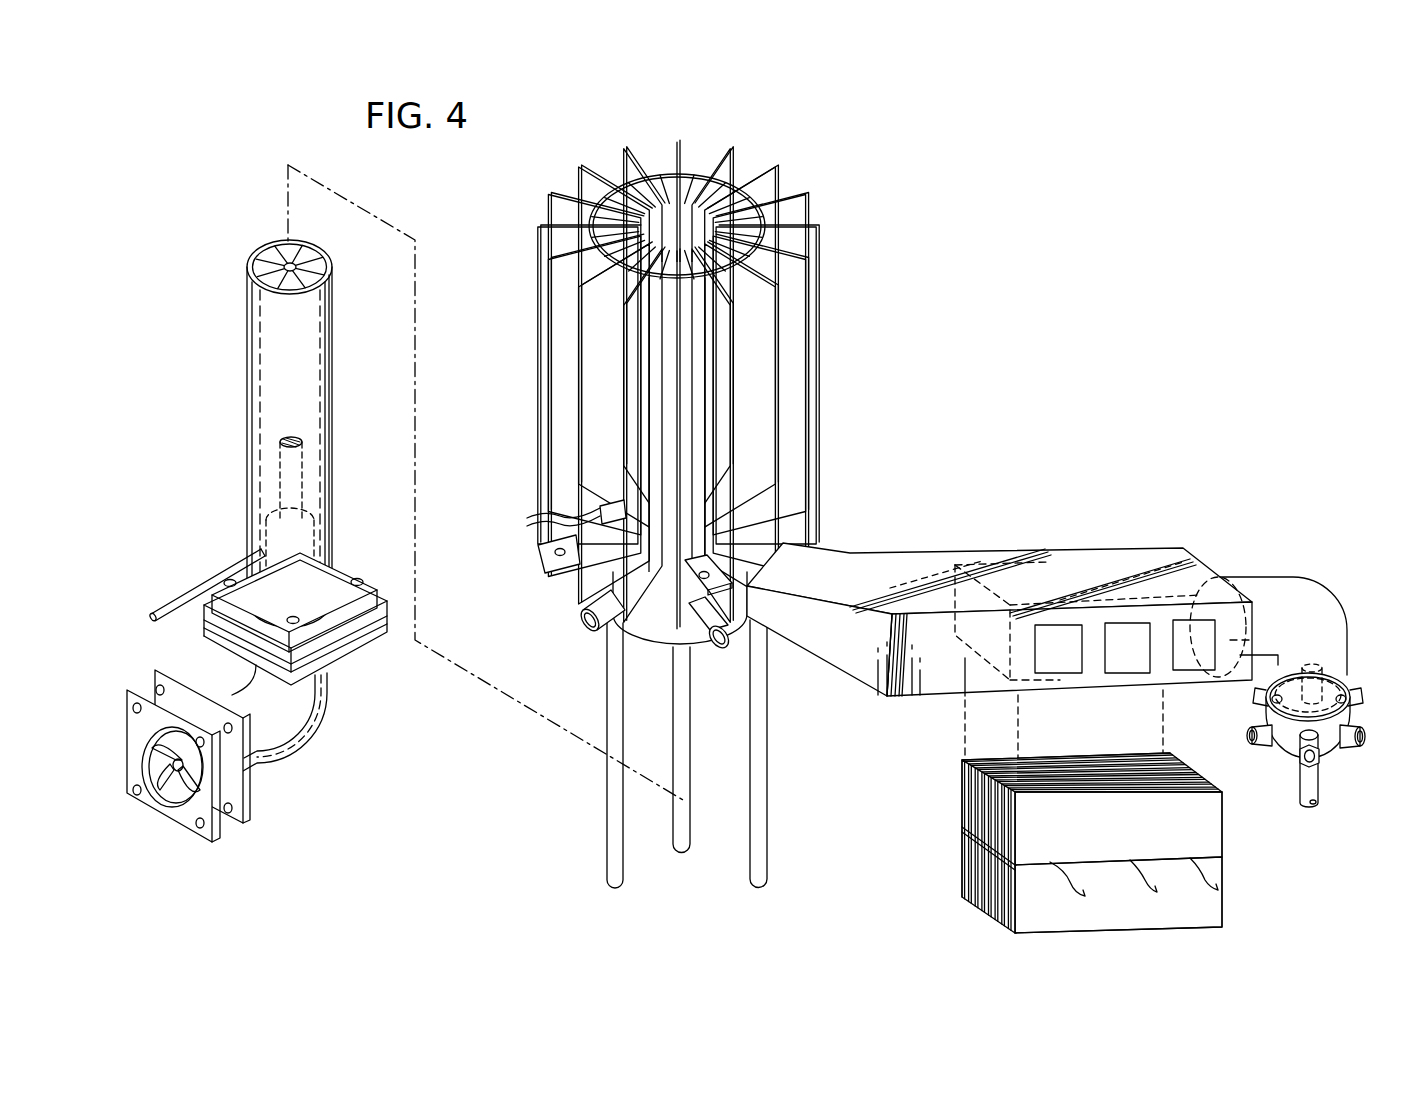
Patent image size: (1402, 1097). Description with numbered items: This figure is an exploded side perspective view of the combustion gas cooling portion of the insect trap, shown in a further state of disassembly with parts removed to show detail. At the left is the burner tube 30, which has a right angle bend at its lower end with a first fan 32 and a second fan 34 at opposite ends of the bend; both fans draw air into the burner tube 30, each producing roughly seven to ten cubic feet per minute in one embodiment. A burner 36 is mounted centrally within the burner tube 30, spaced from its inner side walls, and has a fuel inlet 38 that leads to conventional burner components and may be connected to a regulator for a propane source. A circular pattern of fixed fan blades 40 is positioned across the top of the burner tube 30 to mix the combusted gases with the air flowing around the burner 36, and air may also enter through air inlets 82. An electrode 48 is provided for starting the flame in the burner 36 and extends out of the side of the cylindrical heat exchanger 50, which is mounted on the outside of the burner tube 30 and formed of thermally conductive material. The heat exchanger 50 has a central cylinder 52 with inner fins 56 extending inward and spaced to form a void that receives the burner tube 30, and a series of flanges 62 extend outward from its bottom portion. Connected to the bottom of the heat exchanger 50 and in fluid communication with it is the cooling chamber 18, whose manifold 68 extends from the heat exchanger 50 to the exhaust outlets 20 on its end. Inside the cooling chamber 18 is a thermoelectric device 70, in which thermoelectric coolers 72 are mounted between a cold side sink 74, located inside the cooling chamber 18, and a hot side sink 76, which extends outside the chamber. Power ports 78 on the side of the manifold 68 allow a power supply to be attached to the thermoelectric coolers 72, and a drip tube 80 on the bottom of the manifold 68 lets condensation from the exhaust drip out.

The cooling chamber 18 is at (1305, 674).
The exhaust outlets 20 is at (1262, 750).
The burner tube 30 is at (299, 424).
The first fan 32 is at (340, 640).
The second fan 34 is at (160, 697).
The burner 36 is at (270, 500).
The fuel inlet 38 is at (172, 612).
The fixed fan blades 40 is at (266, 250).
The electrode 48 is at (545, 512).
The cylindrical heat exchanger 50 is at (666, 492).
The central cylinder 52 is at (726, 172).
The inner fins 56 is at (620, 190).
The flanges 62 is at (540, 550).
The manifold 68 is at (999, 654).
The thermoelectric device 70 is at (1079, 843).
The thermoelectric coolers 72 is at (1222, 857).
The cold side sink 74 is at (1102, 837).
The hot side sink 76 is at (1134, 919).
The power ports 78 is at (1180, 668).
The drip tube 80 is at (1300, 780).
The air inlets 82 is at (582, 615).